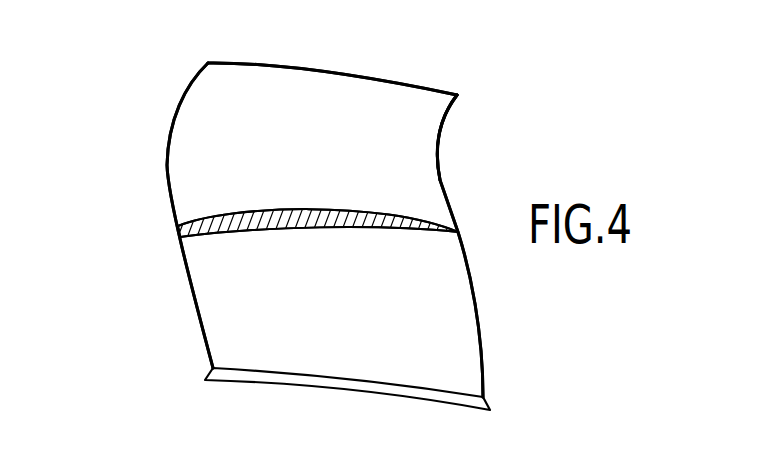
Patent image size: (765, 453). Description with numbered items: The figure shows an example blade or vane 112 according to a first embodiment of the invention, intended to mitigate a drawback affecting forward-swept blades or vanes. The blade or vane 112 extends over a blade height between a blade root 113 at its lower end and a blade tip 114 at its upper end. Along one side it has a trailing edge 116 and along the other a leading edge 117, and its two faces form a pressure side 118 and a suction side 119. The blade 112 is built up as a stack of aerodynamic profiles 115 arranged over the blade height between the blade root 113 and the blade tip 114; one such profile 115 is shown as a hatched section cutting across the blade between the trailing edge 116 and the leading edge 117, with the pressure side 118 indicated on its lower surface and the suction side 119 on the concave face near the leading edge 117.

The blade or vane 112 is at (144, 89).
The blade root 113 is at (308, 388).
The blade tip 114 is at (263, 62).
The aerodynamic profiles 115 is at (253, 213).
The trailing edge 116 is at (168, 192).
The leading edge 117 is at (447, 197).
The pressure side 118 is at (317, 237).
The suction side 119 is at (460, 148).